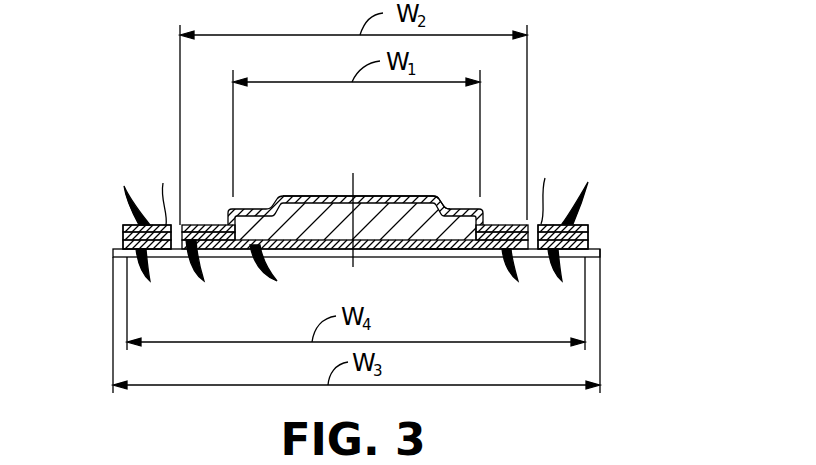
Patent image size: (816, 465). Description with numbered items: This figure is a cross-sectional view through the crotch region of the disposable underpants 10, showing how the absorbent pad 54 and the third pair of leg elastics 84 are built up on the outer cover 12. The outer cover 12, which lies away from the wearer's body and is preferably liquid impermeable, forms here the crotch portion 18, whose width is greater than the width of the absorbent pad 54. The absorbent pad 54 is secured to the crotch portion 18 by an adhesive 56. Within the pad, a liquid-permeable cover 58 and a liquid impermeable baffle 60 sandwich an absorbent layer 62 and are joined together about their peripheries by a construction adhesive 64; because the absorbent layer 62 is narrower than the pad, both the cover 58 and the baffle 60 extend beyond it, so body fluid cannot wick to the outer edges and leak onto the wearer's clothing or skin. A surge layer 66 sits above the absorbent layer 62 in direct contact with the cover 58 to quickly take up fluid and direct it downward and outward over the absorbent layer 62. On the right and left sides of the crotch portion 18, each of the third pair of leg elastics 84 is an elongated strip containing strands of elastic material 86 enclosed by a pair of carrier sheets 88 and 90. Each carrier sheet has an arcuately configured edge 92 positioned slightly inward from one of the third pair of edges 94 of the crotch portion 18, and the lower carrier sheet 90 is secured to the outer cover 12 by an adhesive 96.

The disposable underpants 10 is at (570, 128).
The outer cover 12 is at (603, 261).
The crotch portion 18 is at (441, 257).
The absorbent pad 54 is at (432, 194).
The adhesive 56 is at (274, 276).
The liquid-permeable cover 58 is at (275, 196).
The liquid impermeable baffle 60 is at (413, 249).
The absorbent layer 62 is at (388, 204).
The construction adhesive 64 is at (352, 276).
The surge layer 66 is at (320, 200).
The third pair of leg elastics 84 is at (115, 212).
The strand of elastic material 86 is at (352, 187).
The carrier sheet 88 is at (350, 187).
The lower carrier sheet 90 is at (122, 243).
The arcuately configured edge 92 is at (123, 228).
The third pair of edges 94 is at (113, 255).
The adhesive 96 is at (351, 282).